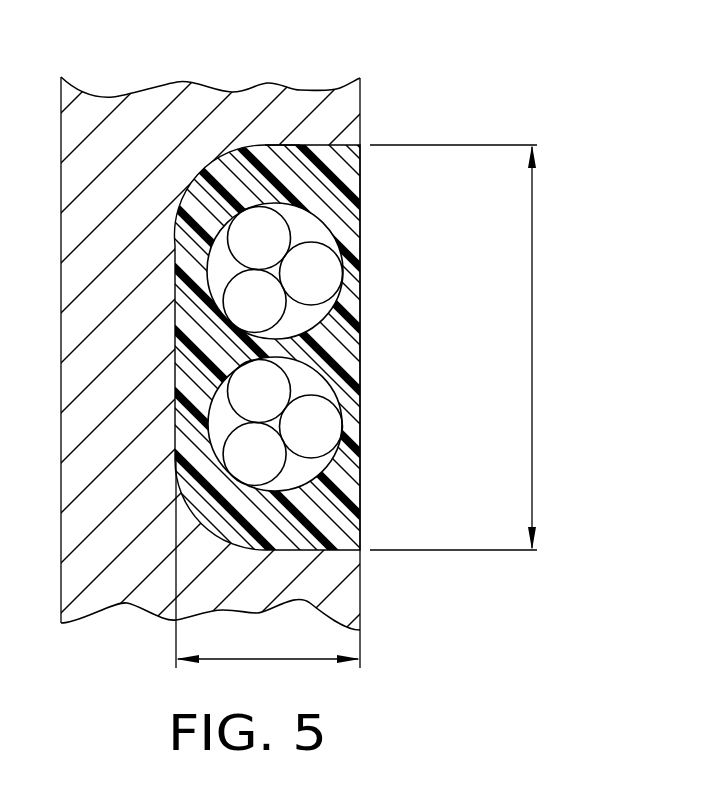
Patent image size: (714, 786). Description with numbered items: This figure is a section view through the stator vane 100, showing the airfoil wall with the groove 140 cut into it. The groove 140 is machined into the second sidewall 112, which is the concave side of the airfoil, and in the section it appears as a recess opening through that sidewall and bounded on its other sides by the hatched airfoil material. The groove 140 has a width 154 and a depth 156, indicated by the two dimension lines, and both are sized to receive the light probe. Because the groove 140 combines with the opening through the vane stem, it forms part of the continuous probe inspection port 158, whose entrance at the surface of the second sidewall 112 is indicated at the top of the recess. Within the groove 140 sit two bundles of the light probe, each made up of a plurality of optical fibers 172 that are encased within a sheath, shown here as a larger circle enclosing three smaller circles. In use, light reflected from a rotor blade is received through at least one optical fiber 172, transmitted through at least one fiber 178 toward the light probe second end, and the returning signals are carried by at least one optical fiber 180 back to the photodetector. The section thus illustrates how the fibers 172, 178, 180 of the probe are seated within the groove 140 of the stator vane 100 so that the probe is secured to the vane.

The stator vane 100 is at (418, 52).
The second sidewall 112 is at (362, 582).
The groove 140 is at (322, 142).
The width 154 is at (532, 383).
The depth 156 is at (308, 661).
The probe inspection port 158 is at (275, 143).
The optical fibers 172 is at (326, 268).
The fiber 178 is at (273, 238).
The optical fiber 180 is at (267, 393).